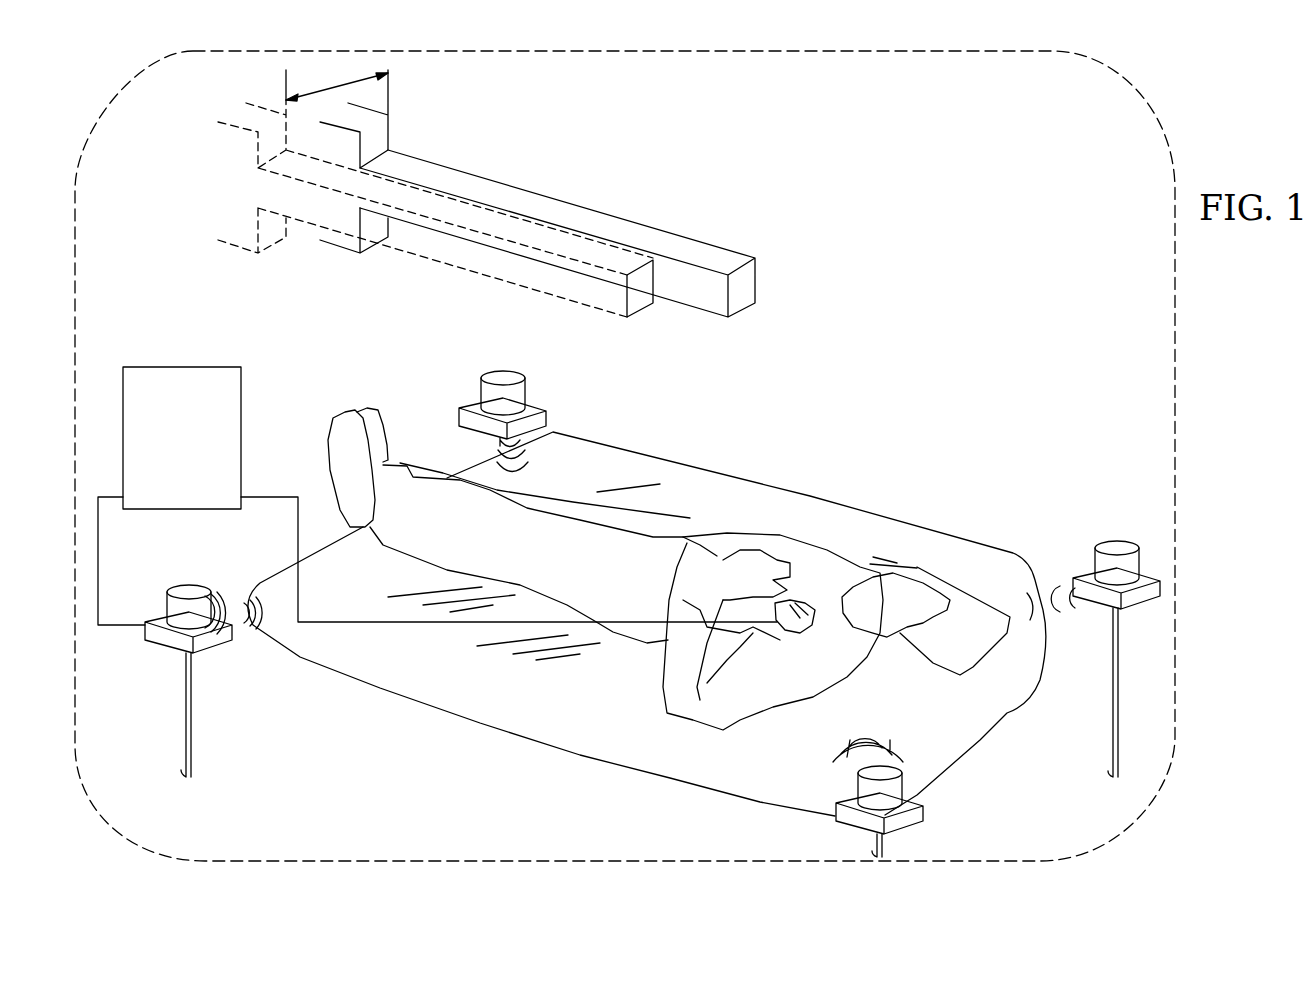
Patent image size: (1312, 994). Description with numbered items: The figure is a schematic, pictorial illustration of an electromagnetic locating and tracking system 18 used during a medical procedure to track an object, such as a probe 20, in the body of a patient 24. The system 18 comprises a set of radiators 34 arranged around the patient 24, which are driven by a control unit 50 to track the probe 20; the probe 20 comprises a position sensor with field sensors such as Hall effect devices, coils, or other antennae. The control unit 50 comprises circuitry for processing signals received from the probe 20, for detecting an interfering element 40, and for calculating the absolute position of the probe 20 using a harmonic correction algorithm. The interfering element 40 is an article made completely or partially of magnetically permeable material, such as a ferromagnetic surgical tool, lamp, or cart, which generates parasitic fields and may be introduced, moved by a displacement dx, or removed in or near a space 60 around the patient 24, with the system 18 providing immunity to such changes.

The electromagnetic locating and tracking system 18 is at (1032, 175).
The probe 20 is at (783, 635).
The patient 24 is at (337, 428).
The radiators 34 is at (160, 637).
The interfering element 40 is at (747, 292).
The control unit 50 is at (200, 367).
The space 60 is at (1165, 133).